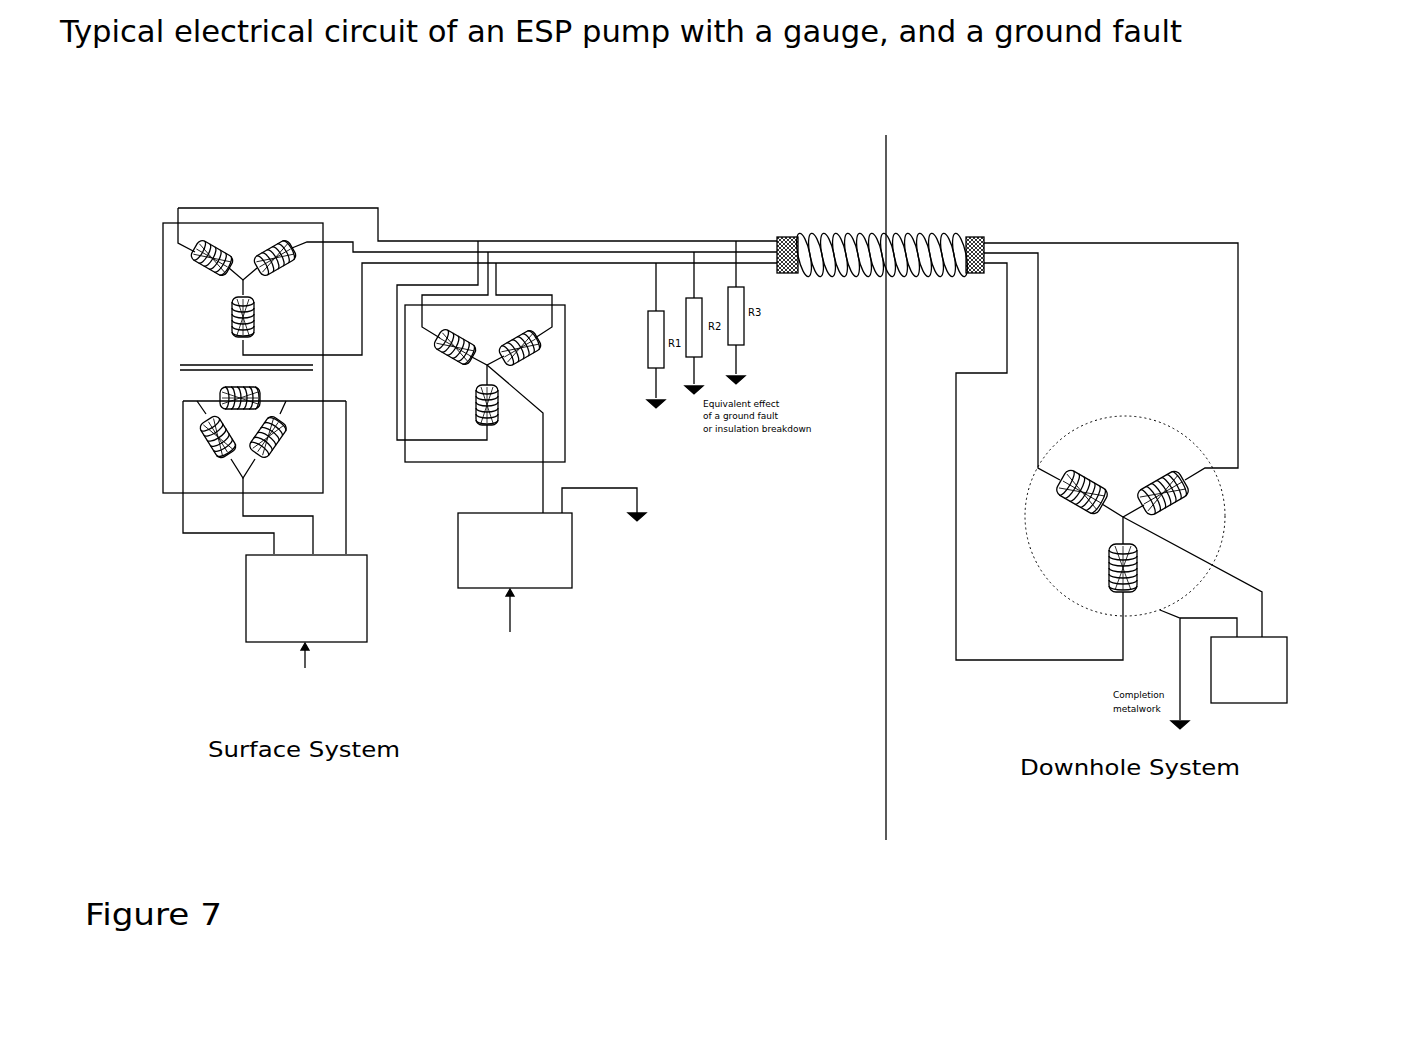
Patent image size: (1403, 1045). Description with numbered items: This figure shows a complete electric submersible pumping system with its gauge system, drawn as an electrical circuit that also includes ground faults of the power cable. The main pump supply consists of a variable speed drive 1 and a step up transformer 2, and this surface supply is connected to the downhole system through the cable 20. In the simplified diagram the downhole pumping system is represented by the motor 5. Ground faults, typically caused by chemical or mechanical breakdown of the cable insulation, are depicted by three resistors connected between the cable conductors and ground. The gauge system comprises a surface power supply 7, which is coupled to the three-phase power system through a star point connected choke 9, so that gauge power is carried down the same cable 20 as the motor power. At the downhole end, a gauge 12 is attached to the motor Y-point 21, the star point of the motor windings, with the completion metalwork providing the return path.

The variable speed drive 1 is at (268, 622).
The step up transformer 2 is at (197, 290).
The motor 5 is at (1162, 440).
The surface power supply 7 is at (555, 550).
The star point connected choke 9 is at (525, 372).
The gauge 12 is at (1272, 683).
The cable 20 is at (932, 240).
The motor Y-point 21 is at (1243, 577).